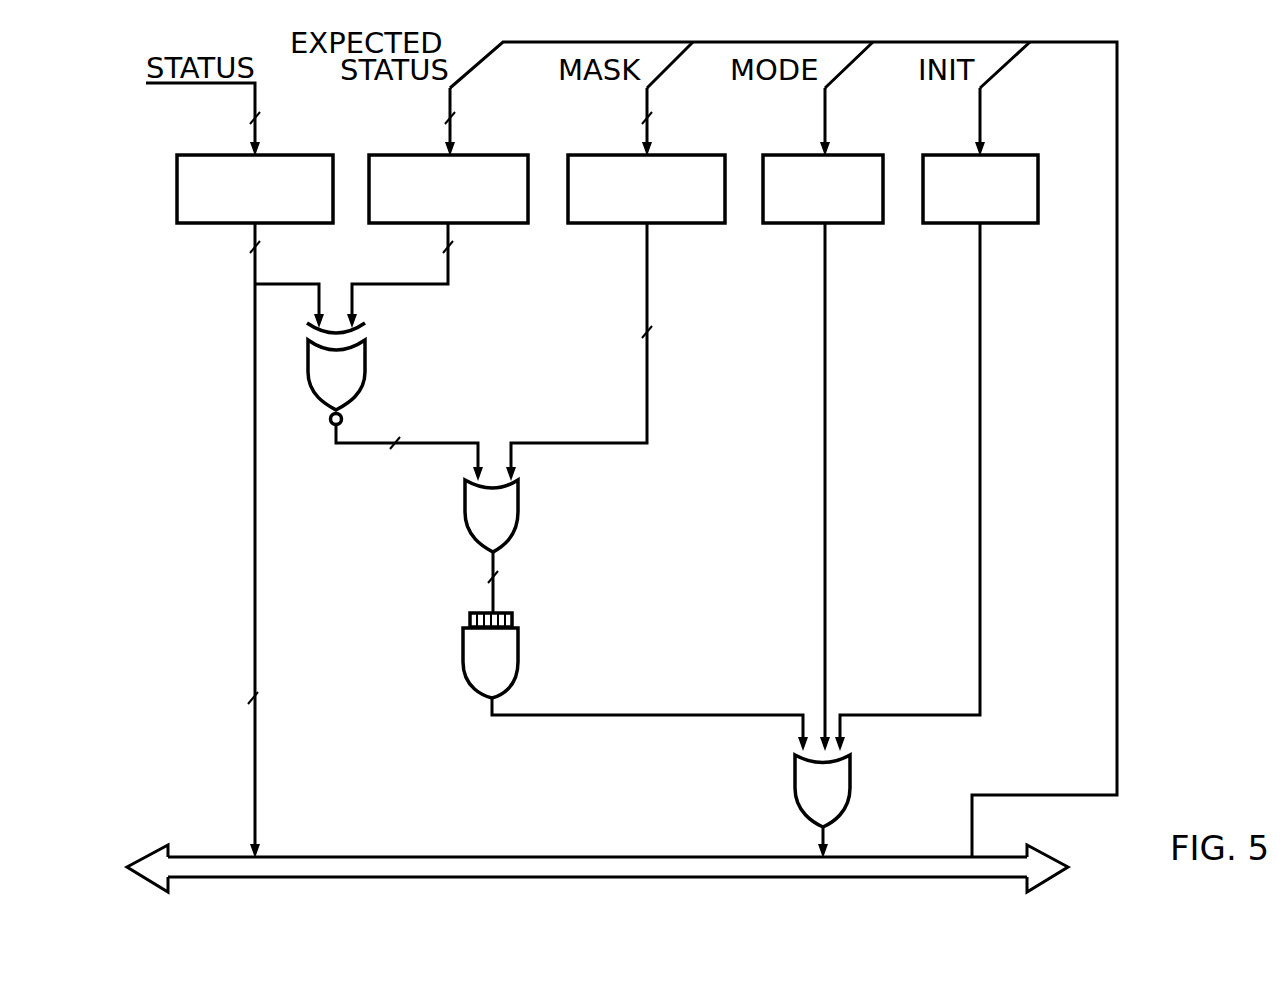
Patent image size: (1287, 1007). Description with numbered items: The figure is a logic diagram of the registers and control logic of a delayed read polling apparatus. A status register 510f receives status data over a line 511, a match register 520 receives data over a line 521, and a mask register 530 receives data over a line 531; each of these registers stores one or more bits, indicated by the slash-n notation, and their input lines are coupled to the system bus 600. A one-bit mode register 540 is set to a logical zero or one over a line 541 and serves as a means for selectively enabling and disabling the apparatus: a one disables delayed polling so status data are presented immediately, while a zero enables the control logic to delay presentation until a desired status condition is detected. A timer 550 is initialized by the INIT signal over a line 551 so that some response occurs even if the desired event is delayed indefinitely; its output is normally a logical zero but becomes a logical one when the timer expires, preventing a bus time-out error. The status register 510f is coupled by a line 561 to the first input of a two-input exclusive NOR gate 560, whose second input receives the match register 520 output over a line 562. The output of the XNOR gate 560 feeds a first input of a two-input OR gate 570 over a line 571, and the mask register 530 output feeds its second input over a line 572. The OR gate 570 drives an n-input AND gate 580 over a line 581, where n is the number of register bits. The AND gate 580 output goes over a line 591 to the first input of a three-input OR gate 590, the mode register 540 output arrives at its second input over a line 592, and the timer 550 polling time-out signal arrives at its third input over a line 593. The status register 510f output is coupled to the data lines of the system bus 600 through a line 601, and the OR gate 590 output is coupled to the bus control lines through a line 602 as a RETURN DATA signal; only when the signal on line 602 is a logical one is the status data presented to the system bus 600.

The line 511 is at (168, 83).
The line 521 is at (450, 103).
The line 531 is at (647, 102).
The line 541 is at (825, 104).
The line 551 is at (980, 106).
The status register 510f is at (198, 223).
The match register 520 is at (507, 223).
The mask register 530 is at (702, 223).
The mode register 540 is at (860, 223).
The timer 550 is at (1018, 223).
The line 561 is at (305, 282).
The line 562 is at (408, 284).
The exclusive NOR (XNOR) gate 560 is at (312, 390).
The line 571 is at (455, 440).
The line 572 is at (600, 443).
The OR gate 570 is at (465, 500).
The line 581 is at (495, 558).
The AND gate 580 is at (465, 670).
The line 601 is at (253, 638).
The line 592 is at (825, 650).
The line 593 is at (980, 530).
The line 591 is at (643, 715).
The OR gate 590 is at (797, 790).
The line 602 is at (823, 833).
The system bus 600 is at (203, 857).